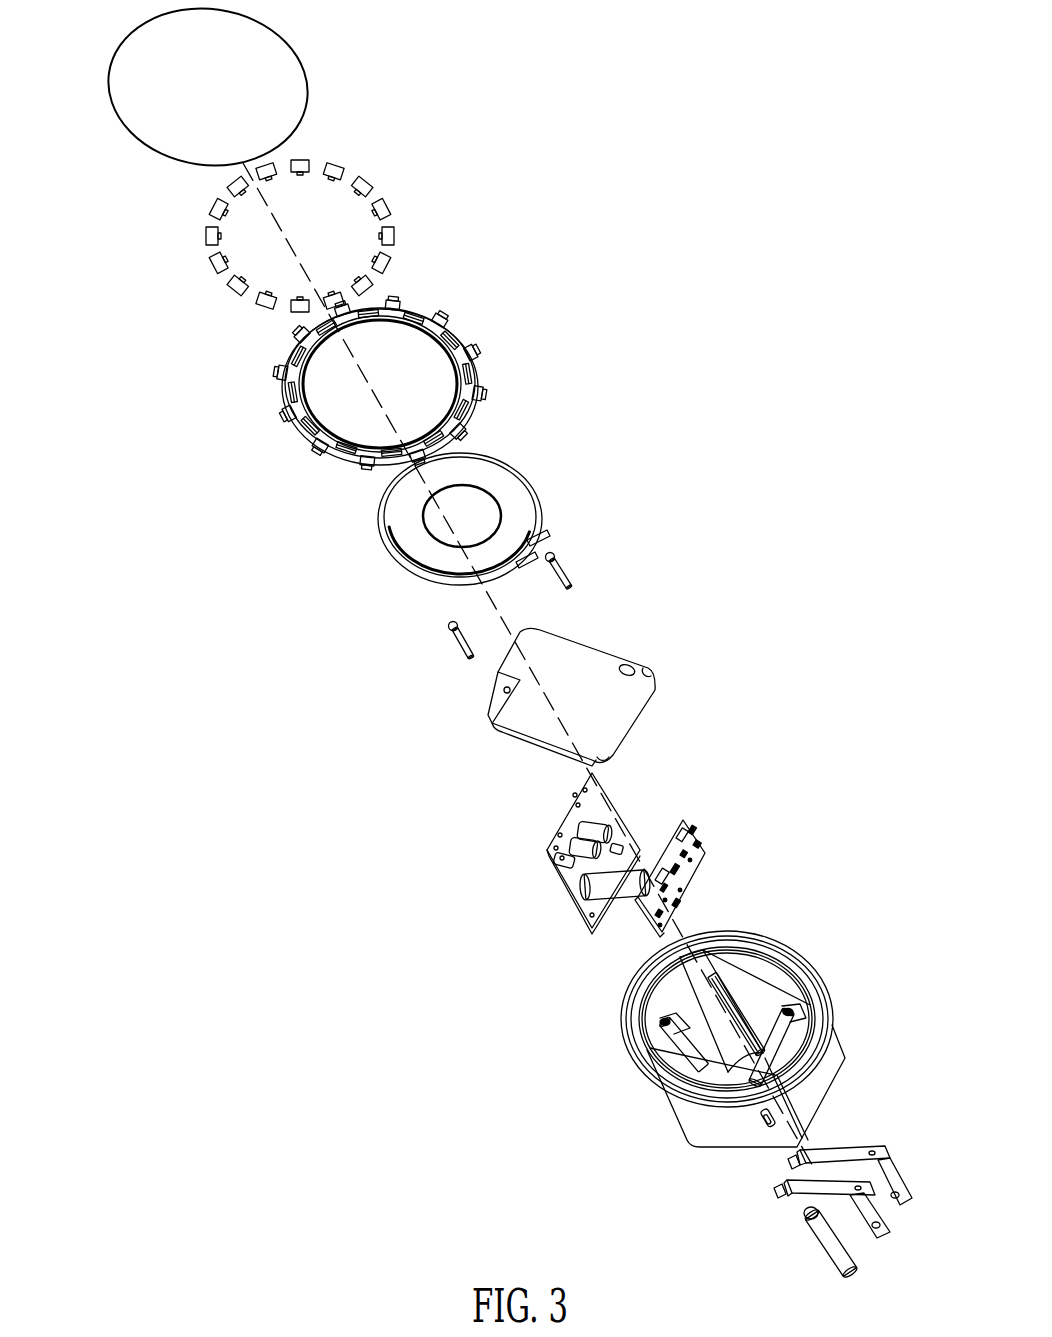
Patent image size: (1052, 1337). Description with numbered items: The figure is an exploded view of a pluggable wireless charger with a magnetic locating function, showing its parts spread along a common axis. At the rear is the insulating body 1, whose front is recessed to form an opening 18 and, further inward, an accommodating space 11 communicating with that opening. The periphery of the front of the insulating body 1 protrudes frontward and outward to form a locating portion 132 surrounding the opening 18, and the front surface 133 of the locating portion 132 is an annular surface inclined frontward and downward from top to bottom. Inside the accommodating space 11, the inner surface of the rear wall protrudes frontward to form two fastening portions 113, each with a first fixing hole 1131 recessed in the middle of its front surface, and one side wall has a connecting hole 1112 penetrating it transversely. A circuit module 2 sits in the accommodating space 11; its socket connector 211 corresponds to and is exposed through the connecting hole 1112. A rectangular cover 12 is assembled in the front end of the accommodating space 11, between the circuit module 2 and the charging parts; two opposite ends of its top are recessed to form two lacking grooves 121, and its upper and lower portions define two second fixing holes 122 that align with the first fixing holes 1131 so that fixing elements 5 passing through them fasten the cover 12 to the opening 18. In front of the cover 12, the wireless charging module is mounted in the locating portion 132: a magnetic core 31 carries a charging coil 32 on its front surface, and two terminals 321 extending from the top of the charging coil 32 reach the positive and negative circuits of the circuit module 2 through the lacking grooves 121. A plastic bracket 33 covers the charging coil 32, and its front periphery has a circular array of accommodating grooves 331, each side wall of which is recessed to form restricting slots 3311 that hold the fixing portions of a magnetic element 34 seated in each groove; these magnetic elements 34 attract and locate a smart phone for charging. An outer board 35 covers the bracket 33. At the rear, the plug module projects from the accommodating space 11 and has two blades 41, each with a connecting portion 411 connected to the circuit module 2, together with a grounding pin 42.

The insulating body 1 is at (711, 1031).
The accommodating space 11 is at (718, 1052).
The connecting hole 1112 is at (760, 1127).
The fastening portion 113 is at (812, 1013).
The first fixing hole 1131 is at (793, 1000).
The cover 12 is at (580, 711).
The lacking groove 121 is at (648, 673).
The second fixing hole 122 is at (628, 670).
The locating portion 132 is at (683, 1097).
The front surface 133 is at (745, 945).
The opening 18 is at (763, 983).
The circuit module 2 is at (647, 874).
The socket connector 211 is at (677, 913).
The magnetic core 31 is at (501, 513).
The charging coil 32 is at (483, 477).
The terminal 321 is at (543, 533).
The bracket 33 is at (412, 402).
The accommodating groove 331 is at (470, 360).
The restricting slot 3311 is at (458, 343).
The magnetic element 34 is at (393, 208).
The outer board 35 is at (290, 77).
The blade 41 is at (860, 1158).
The connecting portion 411 is at (837, 1153).
The grounding pin 42 is at (820, 1230).
The fixing element 5 is at (567, 573).